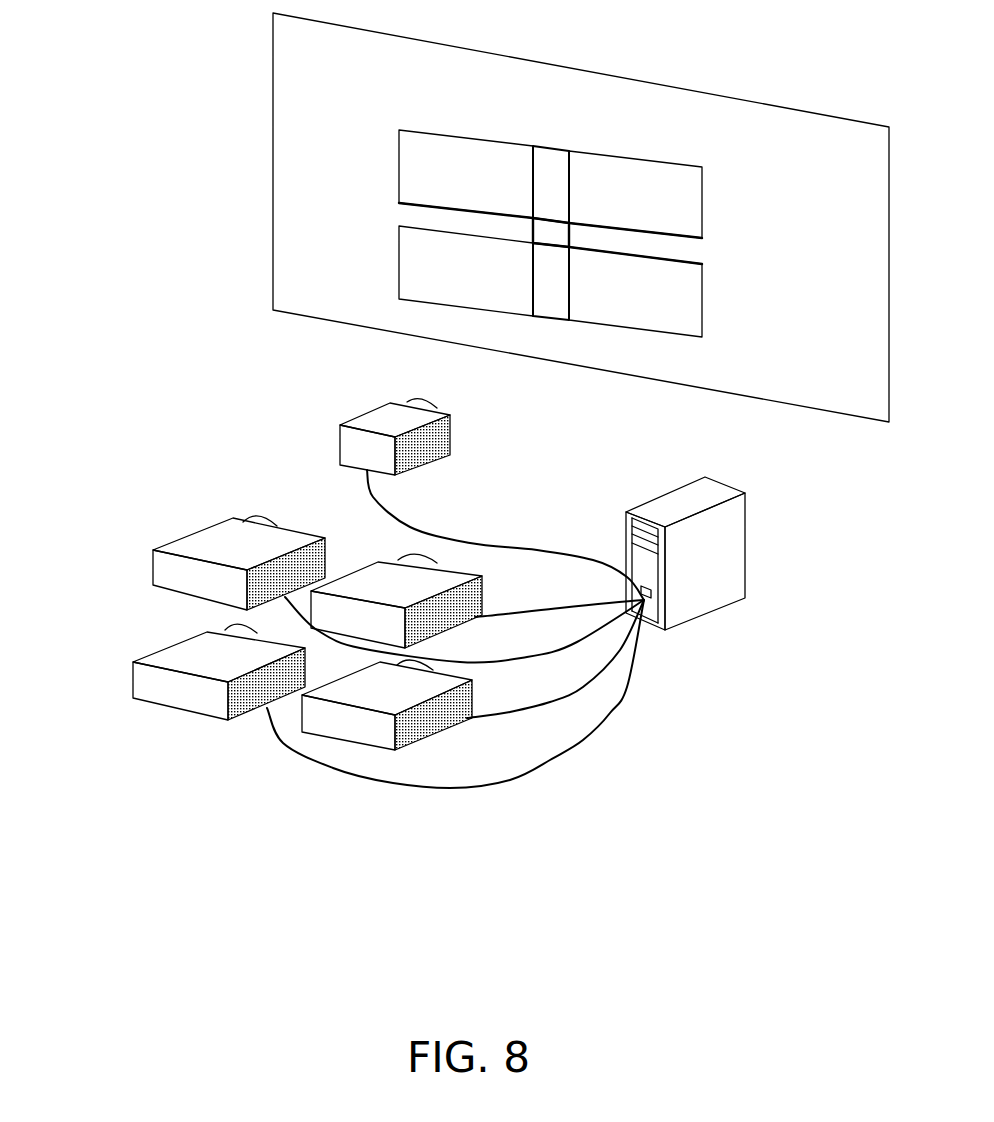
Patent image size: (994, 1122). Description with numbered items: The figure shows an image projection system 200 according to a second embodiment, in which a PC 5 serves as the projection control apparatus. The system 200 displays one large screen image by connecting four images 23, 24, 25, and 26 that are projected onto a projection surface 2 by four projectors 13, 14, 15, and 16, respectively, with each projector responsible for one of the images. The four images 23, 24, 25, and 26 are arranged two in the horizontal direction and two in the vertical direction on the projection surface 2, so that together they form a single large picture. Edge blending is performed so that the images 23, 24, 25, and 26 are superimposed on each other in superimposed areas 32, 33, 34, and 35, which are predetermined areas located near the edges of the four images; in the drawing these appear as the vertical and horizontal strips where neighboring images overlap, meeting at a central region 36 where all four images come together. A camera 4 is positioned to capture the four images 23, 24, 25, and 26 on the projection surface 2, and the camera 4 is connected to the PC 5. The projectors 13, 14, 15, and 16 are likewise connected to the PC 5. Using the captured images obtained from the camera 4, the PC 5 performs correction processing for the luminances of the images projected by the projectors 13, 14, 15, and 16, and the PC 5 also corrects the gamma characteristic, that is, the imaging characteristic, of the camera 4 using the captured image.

The projection surface 2 is at (572, 68).
The first projected image 23 is at (422, 152).
The second projected image 24 is at (687, 200).
The third projected image 25 is at (423, 271).
The fourth projected image 26 is at (690, 315).
The superimposed area 32 is at (550, 177).
The superimposed area 33 is at (400, 203).
The superimposed area 34 is at (565, 298).
The superimposed area 35 is at (687, 257).
The central bezel intersection 36 is at (553, 235).
The camera 4 is at (350, 448).
The PC 5 is at (742, 560).
The projector 13 is at (163, 583).
The projector 14 is at (390, 578).
The projector 15 is at (147, 690).
The projector 16 is at (413, 720).
The image projection system 200 is at (468, 866).